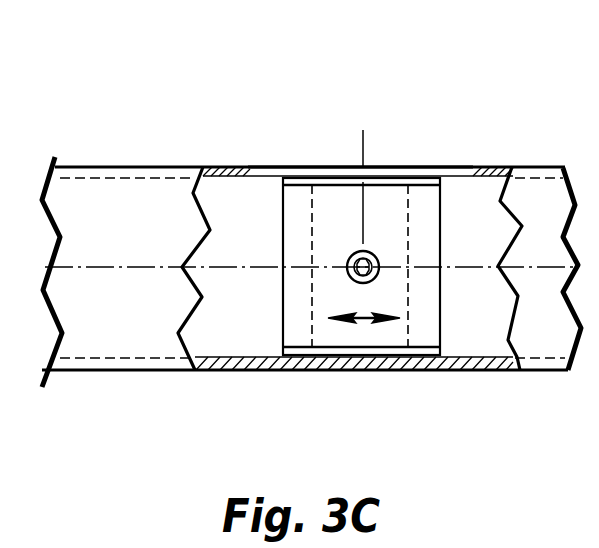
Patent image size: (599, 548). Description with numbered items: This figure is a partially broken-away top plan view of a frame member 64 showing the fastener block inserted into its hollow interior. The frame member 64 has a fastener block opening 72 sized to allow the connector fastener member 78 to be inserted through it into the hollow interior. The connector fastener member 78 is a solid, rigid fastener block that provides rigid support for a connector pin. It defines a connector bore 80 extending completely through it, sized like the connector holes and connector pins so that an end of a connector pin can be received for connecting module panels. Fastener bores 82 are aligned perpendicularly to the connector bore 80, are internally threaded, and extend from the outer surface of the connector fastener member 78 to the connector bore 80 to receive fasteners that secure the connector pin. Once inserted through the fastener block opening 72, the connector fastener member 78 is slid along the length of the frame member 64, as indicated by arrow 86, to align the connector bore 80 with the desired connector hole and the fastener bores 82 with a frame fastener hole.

The frame member 64 is at (113, 167).
The fastener block opening 72 is at (393, 166).
The connector fastener member 78 is at (446, 216).
The connector bore 80 is at (313, 330).
The fastener bore 82 is at (352, 252).
The arrow 86 is at (367, 321).